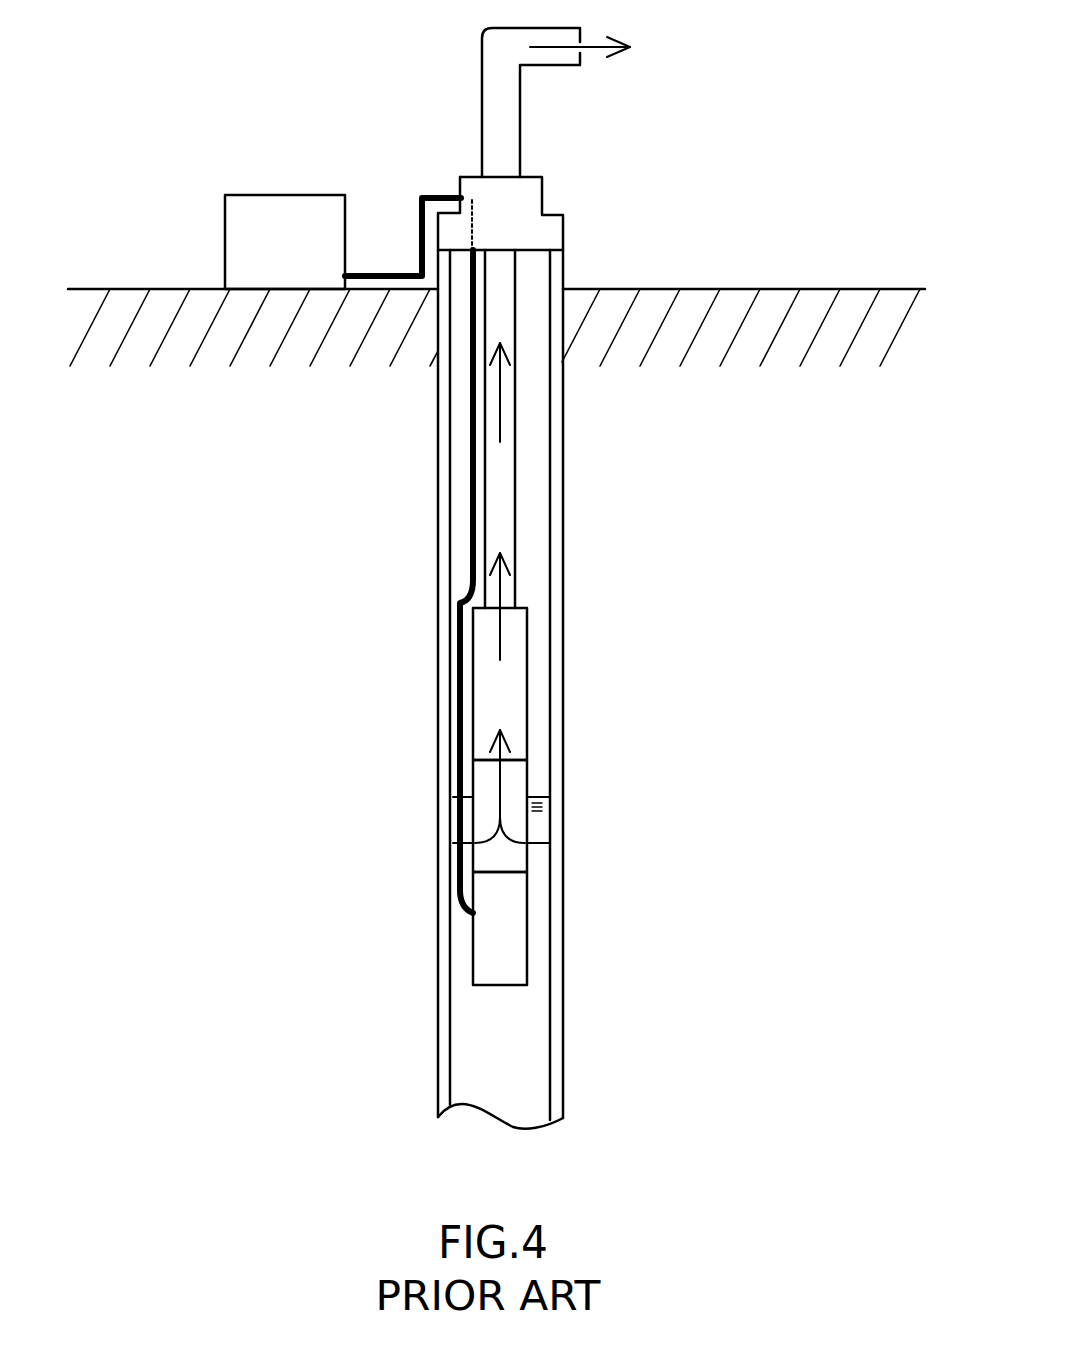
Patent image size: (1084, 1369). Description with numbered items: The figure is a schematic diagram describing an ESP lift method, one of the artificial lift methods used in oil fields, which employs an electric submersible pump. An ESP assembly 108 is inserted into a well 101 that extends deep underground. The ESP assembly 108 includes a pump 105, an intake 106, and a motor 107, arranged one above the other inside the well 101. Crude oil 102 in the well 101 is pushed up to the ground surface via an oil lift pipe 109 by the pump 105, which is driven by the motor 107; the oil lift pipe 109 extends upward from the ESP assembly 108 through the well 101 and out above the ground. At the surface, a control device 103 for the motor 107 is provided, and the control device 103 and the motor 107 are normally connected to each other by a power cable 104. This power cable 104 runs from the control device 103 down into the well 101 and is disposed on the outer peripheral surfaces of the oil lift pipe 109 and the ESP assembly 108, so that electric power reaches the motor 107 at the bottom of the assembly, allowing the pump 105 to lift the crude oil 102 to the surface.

The well 101 is at (557, 410).
The crude oil 102 is at (510, 1038).
The control device 103 is at (290, 215).
The power cable 104 is at (377, 283).
The pump 105 is at (518, 688).
The intake 106 is at (518, 826).
The motor 107 is at (581, 928).
The ESP assembly 108 is at (617, 796).
The oil lift pipe 109 is at (520, 513).